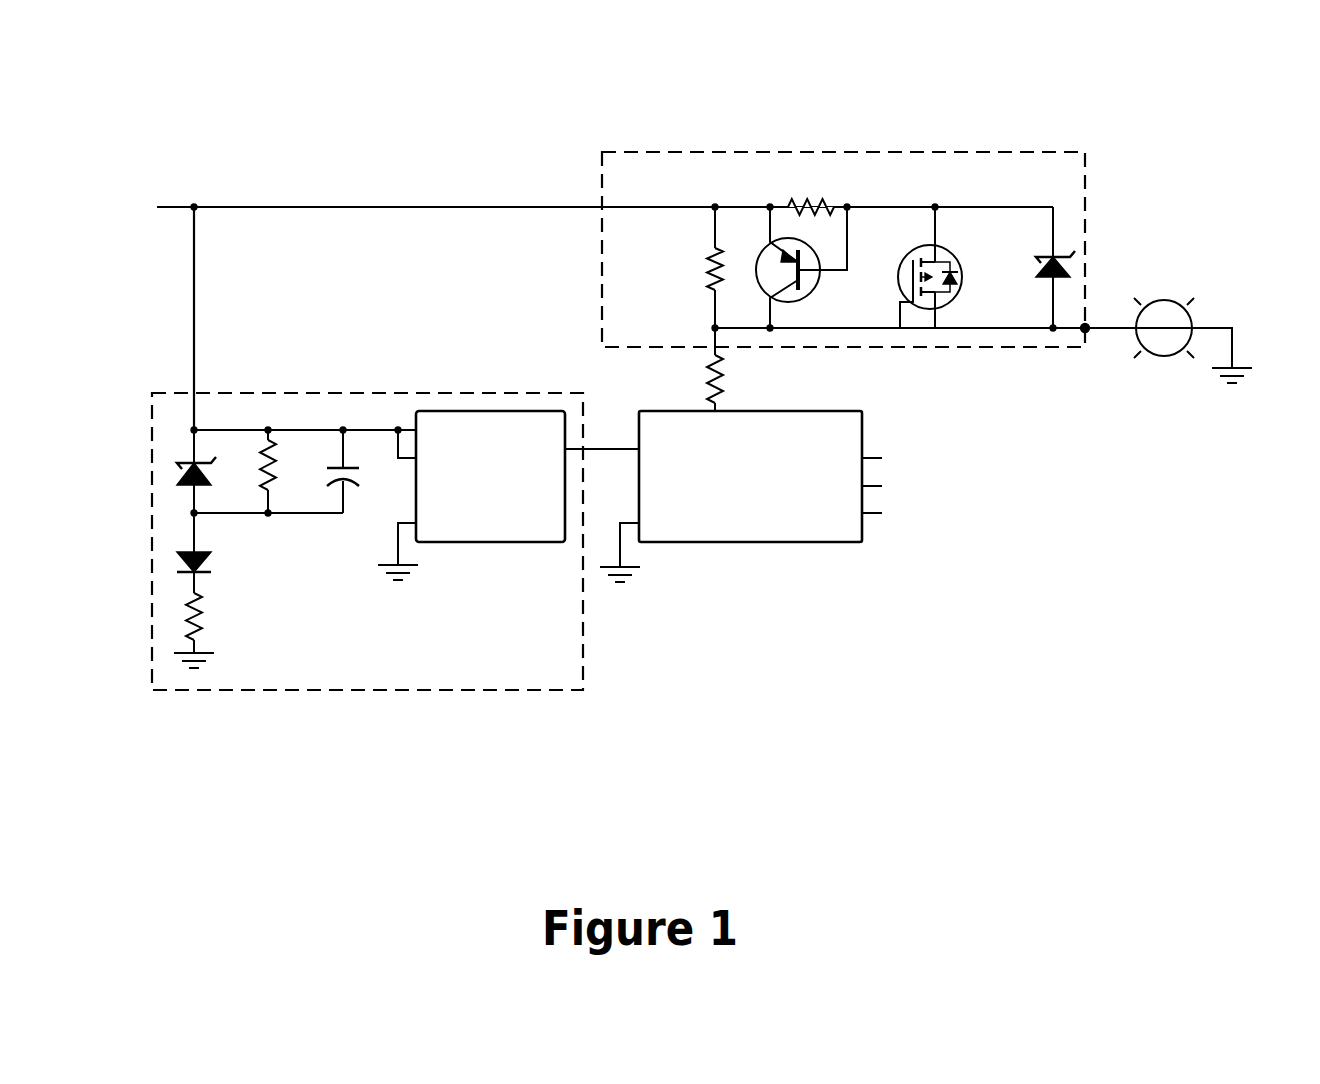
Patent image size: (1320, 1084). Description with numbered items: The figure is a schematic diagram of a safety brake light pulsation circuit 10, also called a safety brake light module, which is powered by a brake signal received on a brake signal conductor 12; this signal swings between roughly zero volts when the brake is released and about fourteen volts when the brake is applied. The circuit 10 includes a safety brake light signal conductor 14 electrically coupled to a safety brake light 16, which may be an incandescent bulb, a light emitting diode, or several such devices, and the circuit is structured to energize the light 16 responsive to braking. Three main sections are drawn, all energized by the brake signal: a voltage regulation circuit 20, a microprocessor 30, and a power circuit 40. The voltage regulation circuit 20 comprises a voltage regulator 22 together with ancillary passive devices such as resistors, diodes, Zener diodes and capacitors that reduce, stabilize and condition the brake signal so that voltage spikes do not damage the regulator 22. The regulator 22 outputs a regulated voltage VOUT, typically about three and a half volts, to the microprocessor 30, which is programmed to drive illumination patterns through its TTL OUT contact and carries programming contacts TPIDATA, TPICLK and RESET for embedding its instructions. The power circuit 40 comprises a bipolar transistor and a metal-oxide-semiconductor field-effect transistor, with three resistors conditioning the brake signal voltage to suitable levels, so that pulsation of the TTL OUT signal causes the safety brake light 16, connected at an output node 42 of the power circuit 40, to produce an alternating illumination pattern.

The safety brake light pulsation circuit 10 is at (238, 87).
The brake signal conductor 12 is at (171, 206).
The safety brake light signal conductor 14 is at (1109, 326).
The safety brake light 16 is at (1169, 300).
The voltage regulation circuit 20 is at (284, 393).
The voltage regulator 22 is at (464, 411).
The microprocessor 30 is at (803, 543).
The power circuit 40 is at (836, 152).
The output node 42 is at (1087, 331).